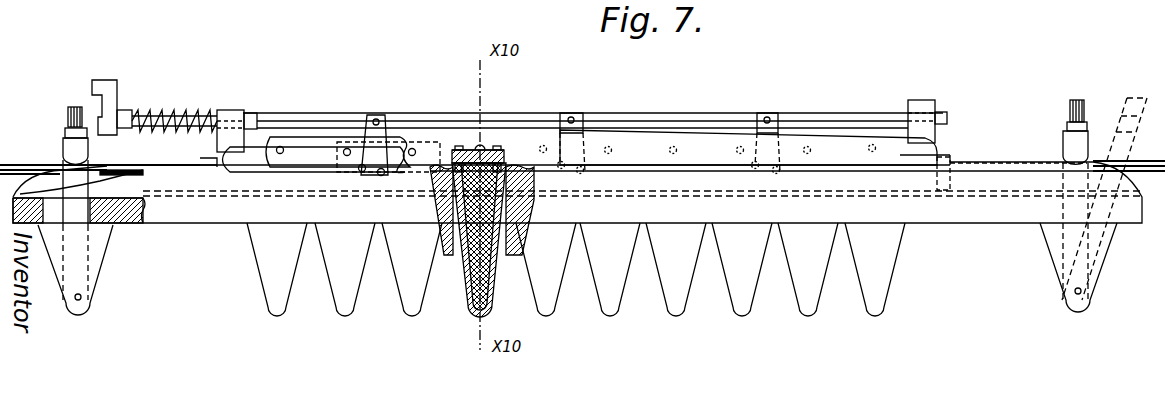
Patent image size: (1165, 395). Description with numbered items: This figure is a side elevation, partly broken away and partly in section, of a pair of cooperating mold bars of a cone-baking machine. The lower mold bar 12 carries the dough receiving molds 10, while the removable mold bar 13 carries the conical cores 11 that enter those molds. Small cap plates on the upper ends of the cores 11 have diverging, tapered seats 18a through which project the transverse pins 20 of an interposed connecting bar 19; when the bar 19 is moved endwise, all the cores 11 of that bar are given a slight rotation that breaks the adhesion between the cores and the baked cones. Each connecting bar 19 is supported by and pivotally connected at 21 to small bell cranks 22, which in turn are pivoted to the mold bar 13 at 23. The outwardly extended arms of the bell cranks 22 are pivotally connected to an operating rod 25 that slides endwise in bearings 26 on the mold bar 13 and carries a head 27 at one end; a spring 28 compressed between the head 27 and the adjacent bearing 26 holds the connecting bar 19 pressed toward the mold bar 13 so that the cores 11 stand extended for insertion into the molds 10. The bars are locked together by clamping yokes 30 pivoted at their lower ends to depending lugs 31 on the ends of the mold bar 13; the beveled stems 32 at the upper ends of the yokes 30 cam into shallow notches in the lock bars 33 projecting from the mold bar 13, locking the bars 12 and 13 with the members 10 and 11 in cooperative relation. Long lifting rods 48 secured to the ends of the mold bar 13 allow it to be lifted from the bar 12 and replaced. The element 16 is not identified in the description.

The receiving molds 10 is at (340, 278).
The conical cores 11 is at (470, 250).
The mold bar 12 is at (143, 226).
The mold bar 13 is at (937, 153).
The cap plate 16 is at (491, 148).
The diverging seats 18a is at (468, 148).
The connecting bar 19 is at (340, 140).
The pins 20 is at (483, 148).
The pivotal connection 21 is at (362, 172).
The bell cranks 22 is at (378, 120).
The pivot 23 is at (381, 176).
The operating rod 25 is at (806, 121).
The bearings 26 is at (232, 112).
The head 27 is at (113, 93).
The spring 28 is at (165, 112).
The clamping yokes 30 is at (80, 240).
The depending lugs 31 is at (103, 236).
The projecting stems 32 is at (68, 110).
The bars 33 is at (145, 156).
The lifting rods 48 is at (12, 164).